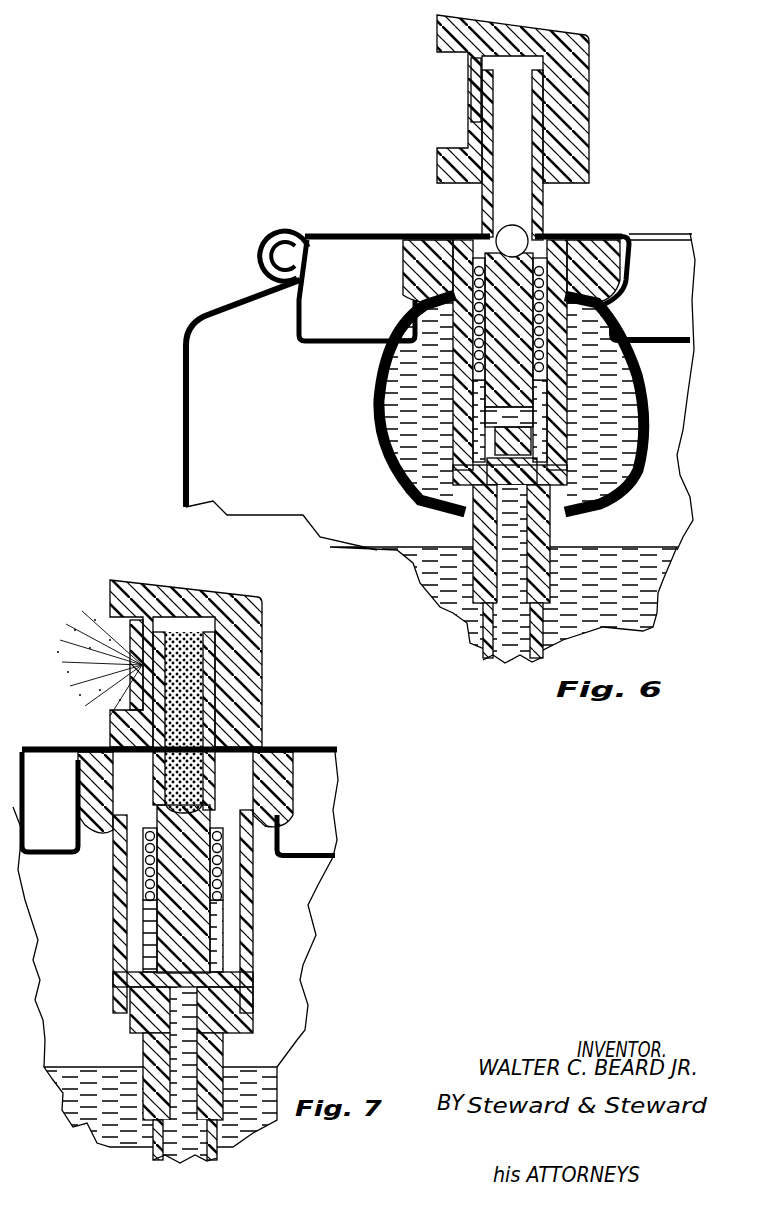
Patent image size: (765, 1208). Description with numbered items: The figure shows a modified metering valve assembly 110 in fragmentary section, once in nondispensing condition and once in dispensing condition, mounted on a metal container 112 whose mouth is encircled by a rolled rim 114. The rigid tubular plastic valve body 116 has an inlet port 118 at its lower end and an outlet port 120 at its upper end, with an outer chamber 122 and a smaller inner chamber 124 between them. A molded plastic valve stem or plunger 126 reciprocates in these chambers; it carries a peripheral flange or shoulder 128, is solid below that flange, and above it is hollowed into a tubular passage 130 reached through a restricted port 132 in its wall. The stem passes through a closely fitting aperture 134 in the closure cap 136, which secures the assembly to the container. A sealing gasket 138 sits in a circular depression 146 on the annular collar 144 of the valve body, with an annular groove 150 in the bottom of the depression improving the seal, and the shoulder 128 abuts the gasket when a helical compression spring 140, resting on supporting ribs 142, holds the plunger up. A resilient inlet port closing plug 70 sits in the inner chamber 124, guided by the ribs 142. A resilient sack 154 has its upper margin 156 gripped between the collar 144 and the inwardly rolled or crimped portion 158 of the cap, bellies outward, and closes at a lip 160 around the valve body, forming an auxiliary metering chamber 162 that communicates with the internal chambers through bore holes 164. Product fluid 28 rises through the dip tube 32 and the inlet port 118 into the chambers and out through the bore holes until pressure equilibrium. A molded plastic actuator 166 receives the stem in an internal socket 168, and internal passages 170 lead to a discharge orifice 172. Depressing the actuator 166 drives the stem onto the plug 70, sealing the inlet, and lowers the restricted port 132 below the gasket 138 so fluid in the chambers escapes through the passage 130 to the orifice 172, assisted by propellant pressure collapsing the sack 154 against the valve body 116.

In FIG. 6, the product fluid 28 is at (606, 550).
In FIG. 7, the product fluid 28 is at (85, 1070).
In FIG. 6, the dip tube 32 is at (567, 547).
In FIG. 6, the inlet port closing plug 70 is at (465, 465).
In FIG. 7, the inlet port closing plug 70 is at (250, 957).
In FIG. 6, the valve assembly 110 is at (303, 229).
In FIG. 7, the valve assembly 110 is at (314, 746).
In FIG. 6, the metal container 112 is at (203, 312).
In FIG. 6, the rolled rim 114 is at (268, 242).
In FIG. 6, the valve body 116 is at (600, 336).
In FIG. 6, the inlet port 118 is at (505, 533).
In FIG. 7, the inlet port 118 is at (197, 1056).
In FIG. 6, the outlet port 120 is at (495, 245).
In FIG. 7, the outlet port 120 is at (297, 772).
In FIG. 6, the outer chamber 122 is at (580, 306).
In FIG. 7, the outer chamber 122 is at (250, 865).
In FIG. 6, the inner chamber 124 is at (440, 493).
In FIG. 7, the inner chamber 124 is at (251, 997).
In FIG. 6, the valve stem or plunger 126 is at (544, 206).
In FIG. 7, the valve stem or plunger 126 is at (213, 707).
In FIG. 6, the peripheral flange or shoulder 128 is at (560, 235).
In FIG. 7, the peripheral flange or shoulder 128 is at (113, 853).
In FIG. 6, the tubular passage 130 is at (535, 108).
In FIG. 7, the tubular passage 130 is at (205, 680).
In FIG. 6, the restricted port 132 is at (480, 205).
In FIG. 7, the restricted port 132 is at (110, 813).
In FIG. 6, the aperture 134 is at (482, 232).
In FIG. 6, the closure cap 136 is at (318, 337).
In FIG. 7, the closure cap 136 is at (337, 843).
In FIG. 6, the sealing gasket 138 is at (433, 240).
In FIG. 7, the sealing gasket 138 is at (105, 750).
In FIG. 6, the helical compression spring 140 is at (588, 280).
In FIG. 7, the helical compression spring 140 is at (123, 890).
In FIG. 6, the supporting ribs 142 is at (612, 385).
In FIG. 7, the supporting ribs 142 is at (251, 898).
In FIG. 6, the annular collar 144 is at (625, 240).
In FIG. 7, the annular collar 144 is at (320, 749).
In FIG. 6, the circular depression 146 is at (617, 235).
In FIG. 7, the circular depression 146 is at (78, 762).
In FIG. 6, the annular groove 150 is at (378, 260).
In FIG. 7, the annular groove 150 is at (110, 783).
In FIG. 6, the resilient sack 154 is at (641, 470).
In FIG. 6, the upper margin 156 is at (425, 300).
In FIG. 7, the upper margin 156 is at (293, 788).
In FIG. 6, the inwardly rolled or crimped portion 158 is at (412, 298).
In FIG. 7, the inwardly rolled or crimped portion 158 is at (287, 812).
In FIG. 6, the lip 160 is at (475, 518).
In FIG. 7, the lip 160 is at (143, 1033).
In FIG. 6, the auxiliary metering chamber 162 is at (433, 422).
In FIG. 6, the bore holes 164 is at (650, 440).
In FIG. 7, the bore holes 164 is at (117, 978).
In FIG. 6, the actuator 166 is at (594, 74).
In FIG. 7, the actuator 166 is at (205, 590).
In FIG. 6, the internal socket 168 is at (553, 29).
In FIG. 7, the internal socket 168 is at (222, 620).
In FIG. 6, the internal passages 170 is at (478, 60).
In FIG. 7, the internal passages 170 is at (148, 620).
In FIG. 6, the discharge orifice 172 is at (472, 100).
In FIG. 7, the discharge orifice 172 is at (130, 665).